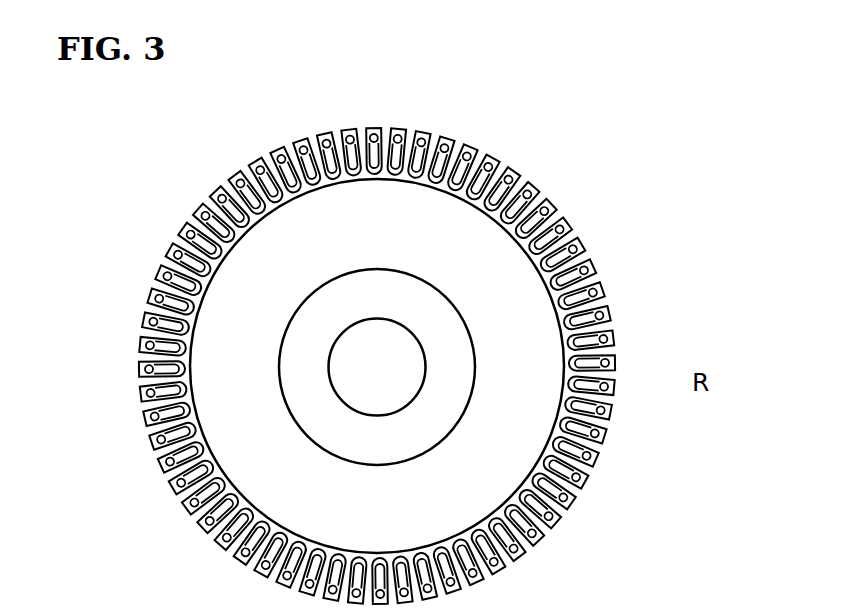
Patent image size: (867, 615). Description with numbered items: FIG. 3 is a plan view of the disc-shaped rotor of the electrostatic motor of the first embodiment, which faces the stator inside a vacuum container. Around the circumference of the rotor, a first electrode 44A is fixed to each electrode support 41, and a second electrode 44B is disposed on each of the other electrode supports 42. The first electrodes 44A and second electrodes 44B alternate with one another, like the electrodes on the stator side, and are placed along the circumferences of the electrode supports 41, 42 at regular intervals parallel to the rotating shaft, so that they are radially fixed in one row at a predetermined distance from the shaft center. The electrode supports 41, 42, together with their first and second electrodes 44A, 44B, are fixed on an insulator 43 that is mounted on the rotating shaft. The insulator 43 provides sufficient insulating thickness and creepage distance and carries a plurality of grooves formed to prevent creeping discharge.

The electrode support 41 is at (482, 180).
The electrode support 42 is at (328, 208).
The insulator 43 is at (448, 335).
The first electrode 44A is at (538, 188).
The second electrode 44B is at (556, 212).